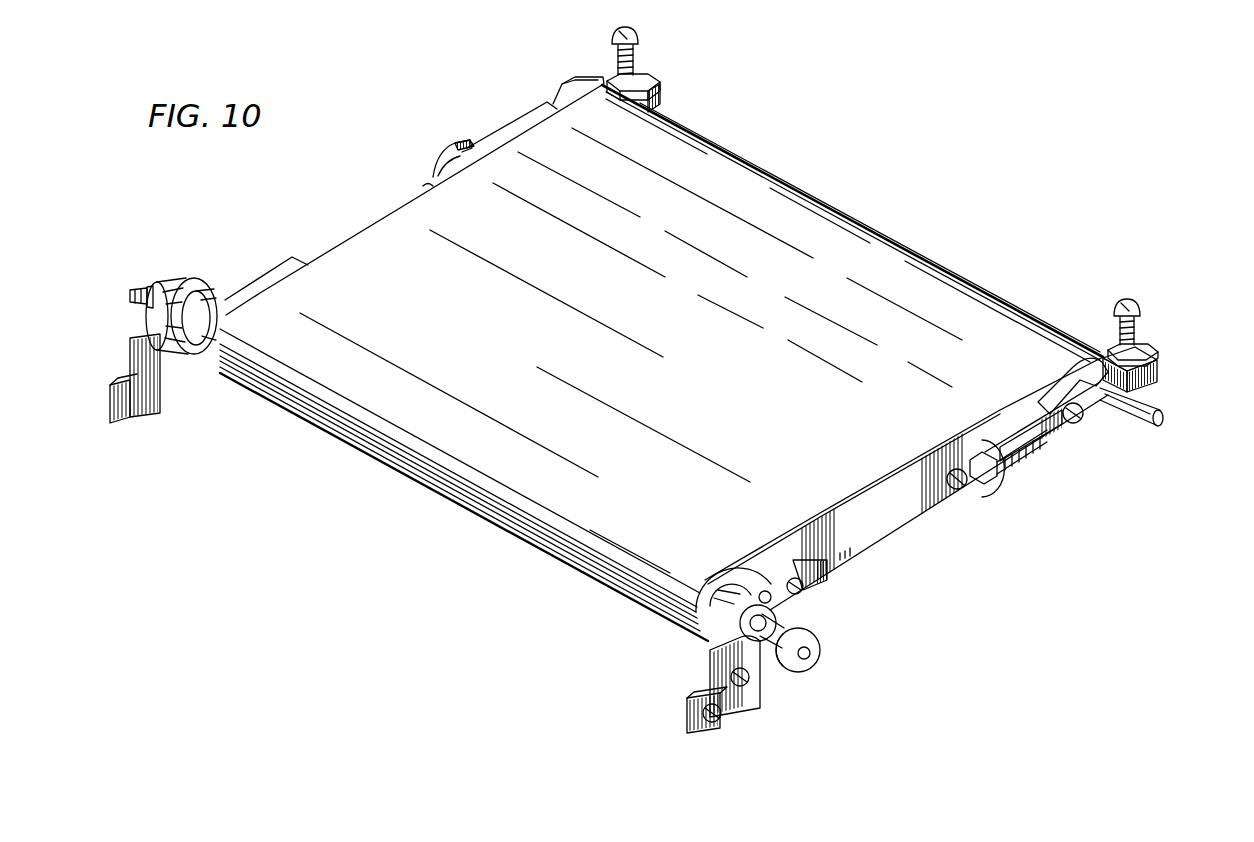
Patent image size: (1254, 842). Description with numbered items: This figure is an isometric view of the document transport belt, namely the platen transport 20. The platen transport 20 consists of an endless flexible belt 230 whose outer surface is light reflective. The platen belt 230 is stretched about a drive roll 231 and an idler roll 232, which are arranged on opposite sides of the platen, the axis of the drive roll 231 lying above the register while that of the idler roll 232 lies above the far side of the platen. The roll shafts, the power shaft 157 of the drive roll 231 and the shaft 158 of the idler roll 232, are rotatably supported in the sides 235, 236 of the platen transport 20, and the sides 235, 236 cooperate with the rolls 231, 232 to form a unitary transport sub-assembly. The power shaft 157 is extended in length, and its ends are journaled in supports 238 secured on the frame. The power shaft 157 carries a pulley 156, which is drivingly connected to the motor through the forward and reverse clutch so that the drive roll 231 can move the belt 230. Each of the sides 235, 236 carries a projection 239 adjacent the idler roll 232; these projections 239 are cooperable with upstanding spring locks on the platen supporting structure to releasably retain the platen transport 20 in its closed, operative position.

The platen transport 20 is at (356, 214).
The pulley 156 is at (792, 633).
The power shaft 157 is at (810, 655).
The roll shaft 158 is at (1168, 412).
The platen belt 230 is at (350, 248).
The drive roll 231 is at (192, 360).
The idler roll 232 is at (1066, 358).
The side 235 is at (862, 540).
The side 236 is at (389, 219).
The support 238 is at (136, 414).
The projection 239 is at (1160, 360).